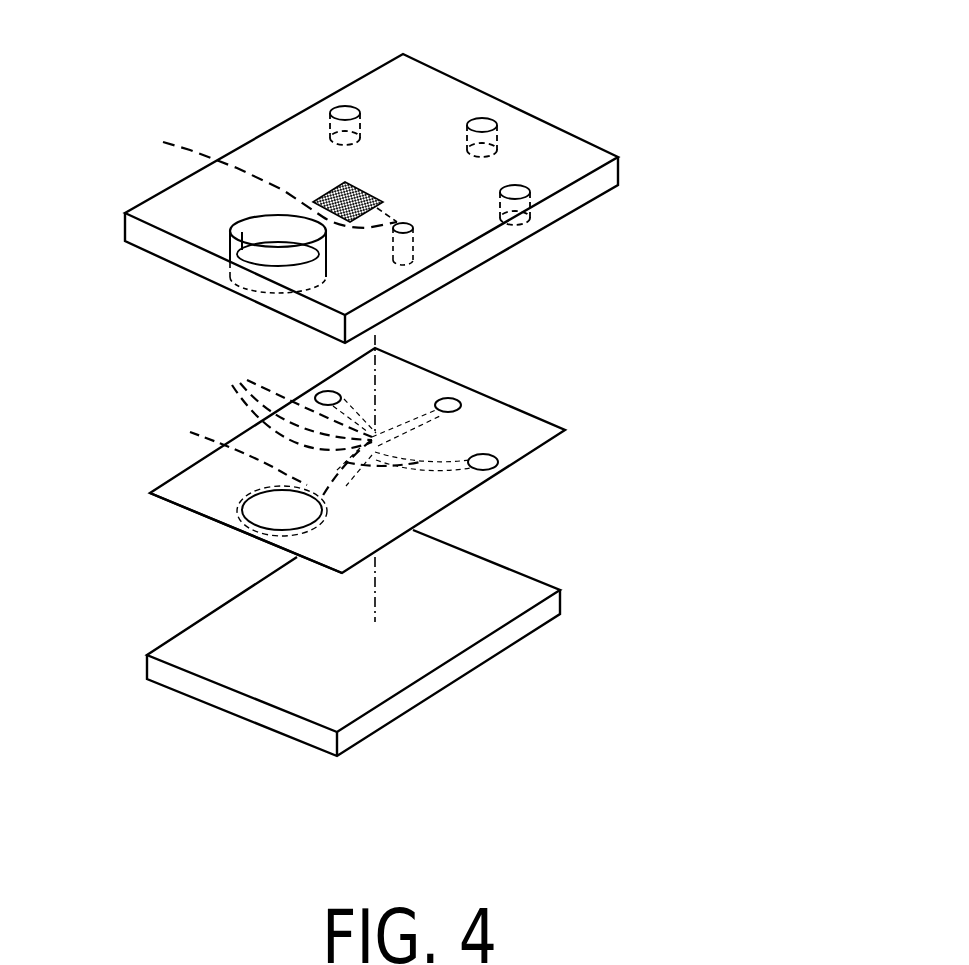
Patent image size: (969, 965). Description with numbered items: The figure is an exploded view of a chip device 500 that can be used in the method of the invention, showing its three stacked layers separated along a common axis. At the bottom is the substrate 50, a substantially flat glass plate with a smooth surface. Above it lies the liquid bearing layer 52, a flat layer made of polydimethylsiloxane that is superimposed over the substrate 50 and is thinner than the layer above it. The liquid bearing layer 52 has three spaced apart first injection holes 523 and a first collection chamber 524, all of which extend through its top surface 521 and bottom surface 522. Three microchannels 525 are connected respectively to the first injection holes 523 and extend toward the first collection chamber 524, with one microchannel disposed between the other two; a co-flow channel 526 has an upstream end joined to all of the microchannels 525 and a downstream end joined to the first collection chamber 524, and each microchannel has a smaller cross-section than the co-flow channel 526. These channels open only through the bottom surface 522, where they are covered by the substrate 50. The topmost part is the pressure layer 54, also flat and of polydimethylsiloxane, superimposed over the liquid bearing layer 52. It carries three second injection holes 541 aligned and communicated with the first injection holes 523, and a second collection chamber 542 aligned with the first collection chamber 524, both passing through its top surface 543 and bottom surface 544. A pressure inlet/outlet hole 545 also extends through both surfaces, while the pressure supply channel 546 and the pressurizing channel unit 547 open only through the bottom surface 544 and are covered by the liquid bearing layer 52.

The chip device 500 is at (560, 535).
The substrate 50 is at (453, 638).
The liquid bearing layer 52 is at (353, 458).
The top surface 521 is at (512, 442).
The bottom surface 522 is at (267, 543).
The first injection holes 523 is at (328, 398).
The first collection chamber 524 is at (260, 512).
The microchannels 525 is at (336, 417).
The co-flow channel 526 is at (216, 448).
The pressure layer 54 is at (415, 174).
The second injection holes 541 is at (517, 190).
The second collection chamber 542 is at (267, 255).
The top surface 543 is at (465, 223).
The bottom surface 544 is at (605, 194).
The pressure inlet/outlet hole 545 is at (405, 229).
The pressure supply channel 546 is at (251, 174).
The pressurizing channel unit 547 is at (325, 188).